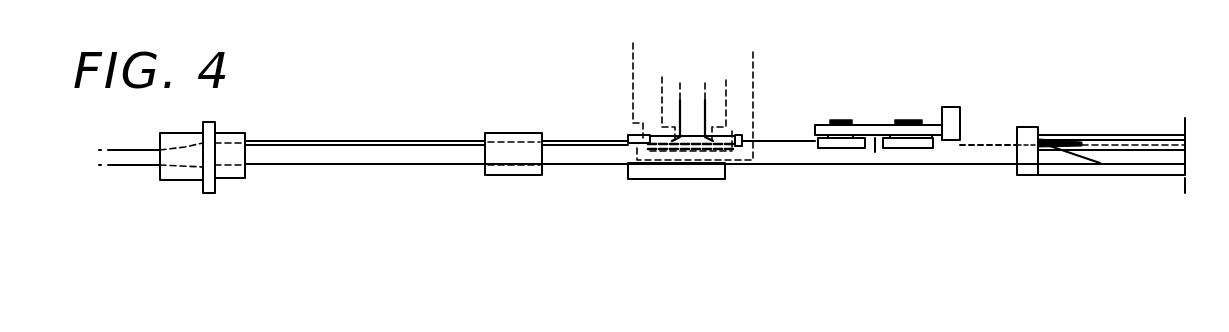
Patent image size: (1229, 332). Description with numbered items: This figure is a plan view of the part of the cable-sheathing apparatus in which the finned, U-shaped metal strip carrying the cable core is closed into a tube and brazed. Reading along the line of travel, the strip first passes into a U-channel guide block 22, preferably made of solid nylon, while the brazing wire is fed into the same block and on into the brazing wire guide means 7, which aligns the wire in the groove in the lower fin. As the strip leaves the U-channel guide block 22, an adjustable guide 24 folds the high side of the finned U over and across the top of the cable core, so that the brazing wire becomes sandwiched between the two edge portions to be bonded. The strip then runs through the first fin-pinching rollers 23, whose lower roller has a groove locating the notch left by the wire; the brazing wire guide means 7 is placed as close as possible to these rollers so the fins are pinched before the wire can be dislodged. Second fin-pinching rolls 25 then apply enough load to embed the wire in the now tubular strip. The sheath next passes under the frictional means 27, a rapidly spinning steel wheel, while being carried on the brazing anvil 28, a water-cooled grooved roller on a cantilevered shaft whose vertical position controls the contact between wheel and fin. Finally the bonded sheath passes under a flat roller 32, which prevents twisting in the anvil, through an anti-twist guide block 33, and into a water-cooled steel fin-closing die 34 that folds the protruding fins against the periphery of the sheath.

The fin-closing die 34 is at (188, 183).
The anti-twist guide block 33 is at (243, 182).
The flat roller 32 is at (523, 177).
The brazing anvil 28 is at (682, 177).
The frictional means 27 is at (695, 118).
The second fin-pinching rolls 25 is at (845, 123).
The first fin-pinching rollers 23 is at (905, 123).
The brazing wire guide means 7 is at (960, 106).
The adjustable guide 24 is at (1028, 127).
The U-channel guide block 22 is at (1120, 172).